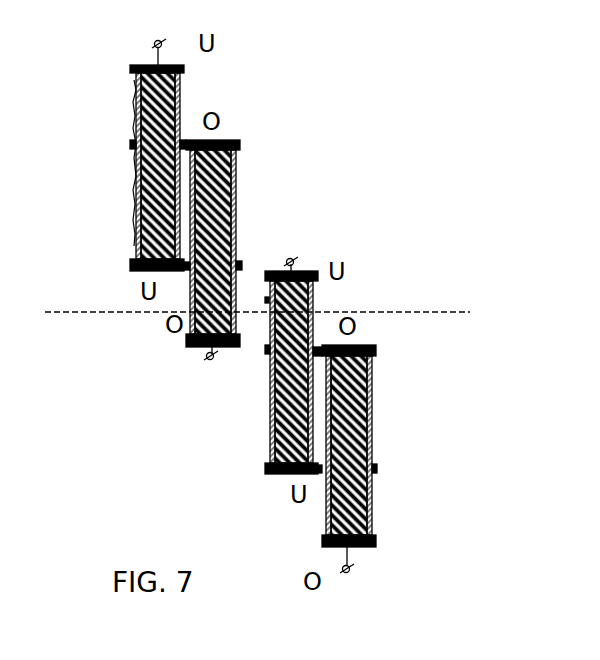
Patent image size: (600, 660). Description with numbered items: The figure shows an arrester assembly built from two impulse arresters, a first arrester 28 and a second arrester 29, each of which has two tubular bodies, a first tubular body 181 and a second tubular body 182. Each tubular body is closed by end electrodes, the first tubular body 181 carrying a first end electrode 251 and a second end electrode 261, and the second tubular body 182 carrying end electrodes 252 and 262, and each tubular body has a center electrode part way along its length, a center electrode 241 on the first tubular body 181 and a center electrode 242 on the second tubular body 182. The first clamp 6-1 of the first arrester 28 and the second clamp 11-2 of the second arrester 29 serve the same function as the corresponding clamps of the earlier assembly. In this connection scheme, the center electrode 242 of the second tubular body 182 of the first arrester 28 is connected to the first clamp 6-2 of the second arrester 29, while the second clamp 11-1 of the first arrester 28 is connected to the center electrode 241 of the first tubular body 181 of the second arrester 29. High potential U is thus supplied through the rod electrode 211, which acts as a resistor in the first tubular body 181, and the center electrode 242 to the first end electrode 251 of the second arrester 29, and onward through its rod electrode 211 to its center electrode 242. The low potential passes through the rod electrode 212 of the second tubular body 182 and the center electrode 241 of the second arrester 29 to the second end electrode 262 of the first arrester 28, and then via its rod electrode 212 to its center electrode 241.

The first tubular body 181 is at (181, 105).
The second tubular body 182 is at (237, 200).
The rod electrode (resistor) of the first tubular body 211 is at (271, 405).
The rod electrode (resistor) of the second tubular body 212 is at (322, 508).
The first end electrode of the first tubular body 251 is at (362, 290).
The end electrode of the second tubular body 252 is at (240, 143).
The second end electrode of the first tubular body 261 is at (265, 470).
The second end electrode of the second tubular body 262 is at (405, 545).
The center electrode of the first tubular body 241 is at (248, 382).
The center electrode of the second tubular body 242 is at (398, 486).
The first clamp 6-1 is at (154, 44).
The first clamp of the second arrester 6-2 is at (293, 260).
The second clamp of the first arrester 11-1 is at (206, 357).
The second clamp 11-2 is at (349, 571).
The first arrester 28 is at (262, 168).
The second arrester 29 is at (388, 460).